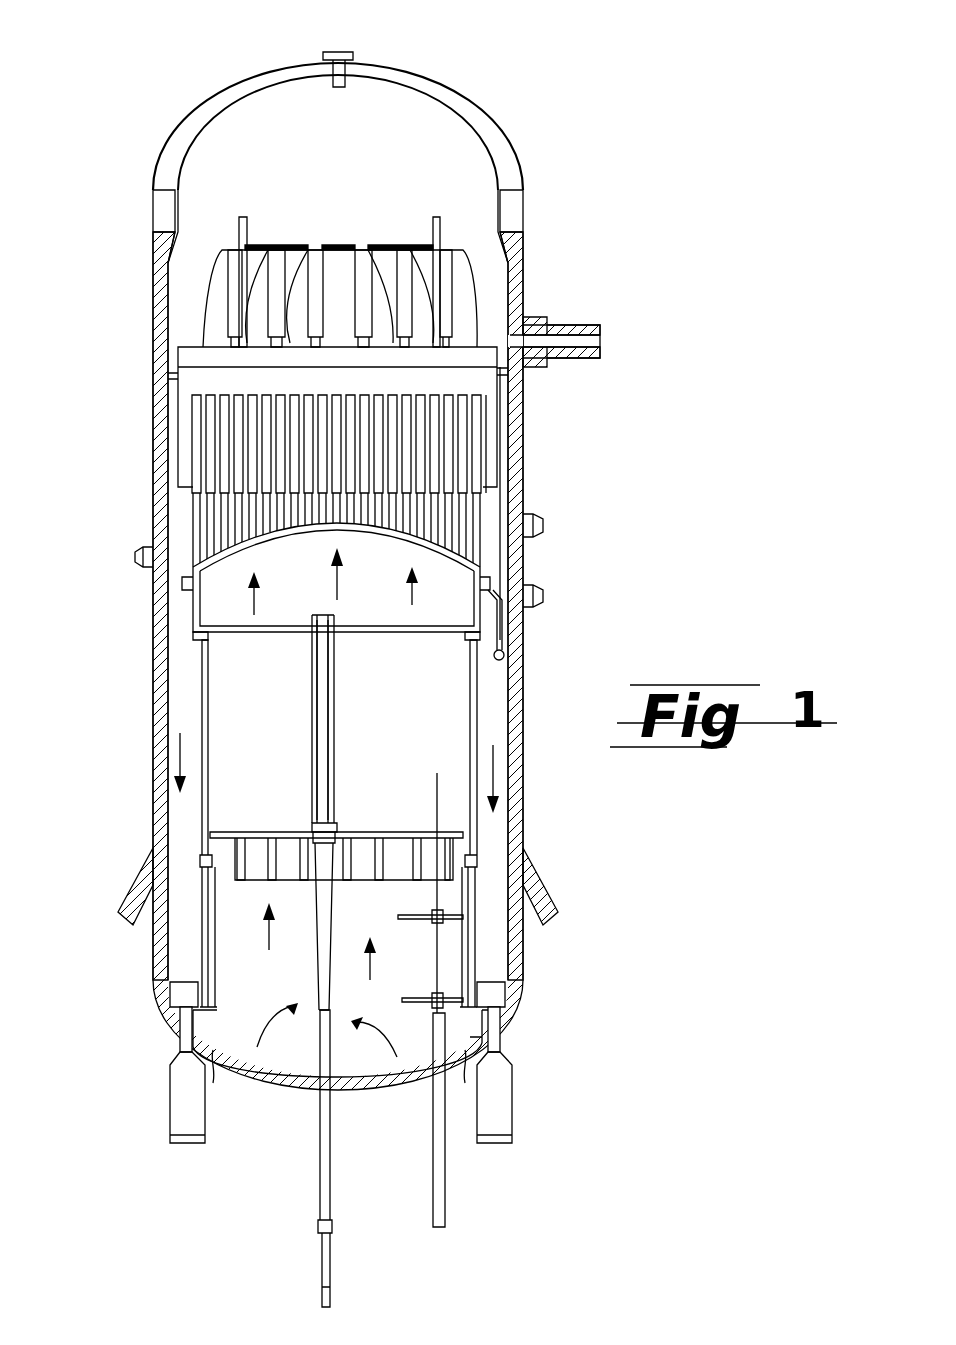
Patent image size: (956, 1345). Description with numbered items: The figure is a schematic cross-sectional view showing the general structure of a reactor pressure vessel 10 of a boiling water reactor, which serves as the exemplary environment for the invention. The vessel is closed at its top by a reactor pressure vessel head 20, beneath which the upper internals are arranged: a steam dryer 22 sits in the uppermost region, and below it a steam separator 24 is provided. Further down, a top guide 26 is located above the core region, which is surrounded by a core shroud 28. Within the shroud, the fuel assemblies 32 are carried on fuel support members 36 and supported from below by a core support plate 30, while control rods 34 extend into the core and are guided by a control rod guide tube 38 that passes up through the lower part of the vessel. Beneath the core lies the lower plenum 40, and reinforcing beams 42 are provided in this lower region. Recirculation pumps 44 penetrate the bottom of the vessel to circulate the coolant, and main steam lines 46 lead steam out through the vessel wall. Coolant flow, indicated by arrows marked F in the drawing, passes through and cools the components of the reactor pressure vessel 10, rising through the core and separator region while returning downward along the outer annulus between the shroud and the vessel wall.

The reactor pressure vessel 10 is at (705, 148).
The reactor pressure vessel head 20 is at (457, 112).
The steam dryer 22 is at (215, 308).
The steam separator 24 is at (247, 467).
The top guide 26 is at (243, 633).
The core shroud 28 is at (470, 777).
The core support plate 30 is at (262, 832).
The fuel assemblies 32 is at (312, 718).
The control rods 34 is at (327, 690).
The fuel support members 36 is at (337, 827).
The control rod guide tube 38 is at (323, 920).
The lower plenum 40 is at (272, 990).
The reinforcing beams 42 is at (418, 862).
The recirculation pumps 44 is at (183, 993).
The main steam lines 46 is at (577, 325).